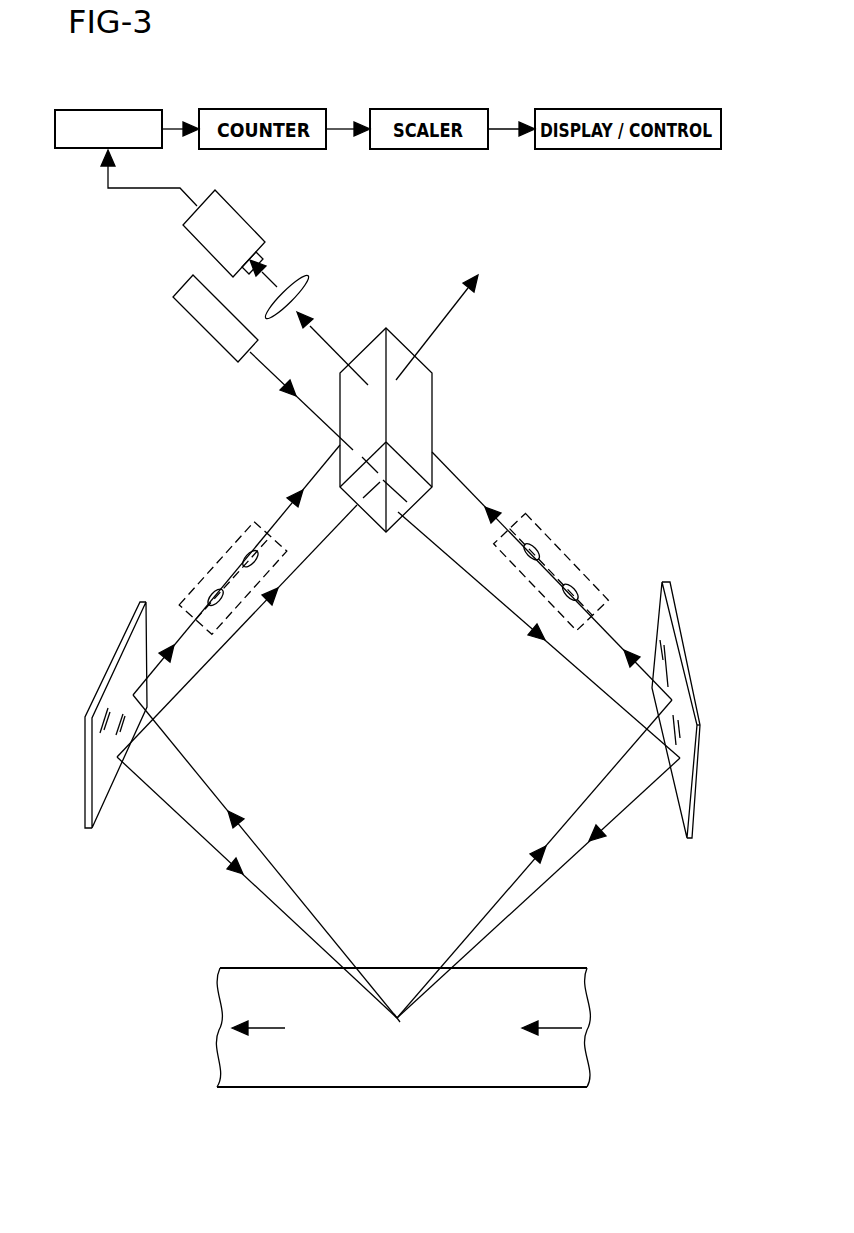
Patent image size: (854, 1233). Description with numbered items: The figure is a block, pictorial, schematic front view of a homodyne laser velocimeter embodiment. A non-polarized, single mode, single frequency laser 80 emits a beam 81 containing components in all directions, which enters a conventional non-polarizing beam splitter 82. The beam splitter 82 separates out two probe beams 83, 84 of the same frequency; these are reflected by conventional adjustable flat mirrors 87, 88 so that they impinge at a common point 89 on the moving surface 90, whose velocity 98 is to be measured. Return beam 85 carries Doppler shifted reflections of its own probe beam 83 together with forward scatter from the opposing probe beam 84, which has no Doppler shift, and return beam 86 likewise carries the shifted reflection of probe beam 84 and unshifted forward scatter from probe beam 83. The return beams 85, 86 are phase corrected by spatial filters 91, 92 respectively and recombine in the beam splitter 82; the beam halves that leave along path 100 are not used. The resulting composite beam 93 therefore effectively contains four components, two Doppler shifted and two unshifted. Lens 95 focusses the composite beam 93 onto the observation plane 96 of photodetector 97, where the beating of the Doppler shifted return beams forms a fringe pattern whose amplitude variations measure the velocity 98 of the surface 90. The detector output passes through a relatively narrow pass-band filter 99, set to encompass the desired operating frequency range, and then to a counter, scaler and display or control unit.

The laser 80 is at (200, 330).
The beam 81 is at (262, 366).
The non-polarizing beam splitter 82 is at (434, 394).
The probe beam 83 is at (556, 644).
The probe beam 84 is at (253, 620).
The return beam 85 is at (582, 805).
The return beam 86 is at (308, 907).
The adjustable flat mirror 87 is at (700, 766).
The adjustable flat mirror 88 is at (85, 790).
The measurement spot 89 is at (400, 1022).
The moving surface 90 is at (575, 1066).
The spatial filter 91 is at (546, 532).
The spatial filter 92 is at (235, 540).
The composite beam 93 is at (342, 373).
The lens 95 is at (301, 278).
The observation plane 96 is at (258, 258).
The photodetector 97 is at (234, 205).
The velocity 98 is at (267, 1032).
The narrow pass-band filter 99 is at (135, 110).
The path 100 is at (454, 306).